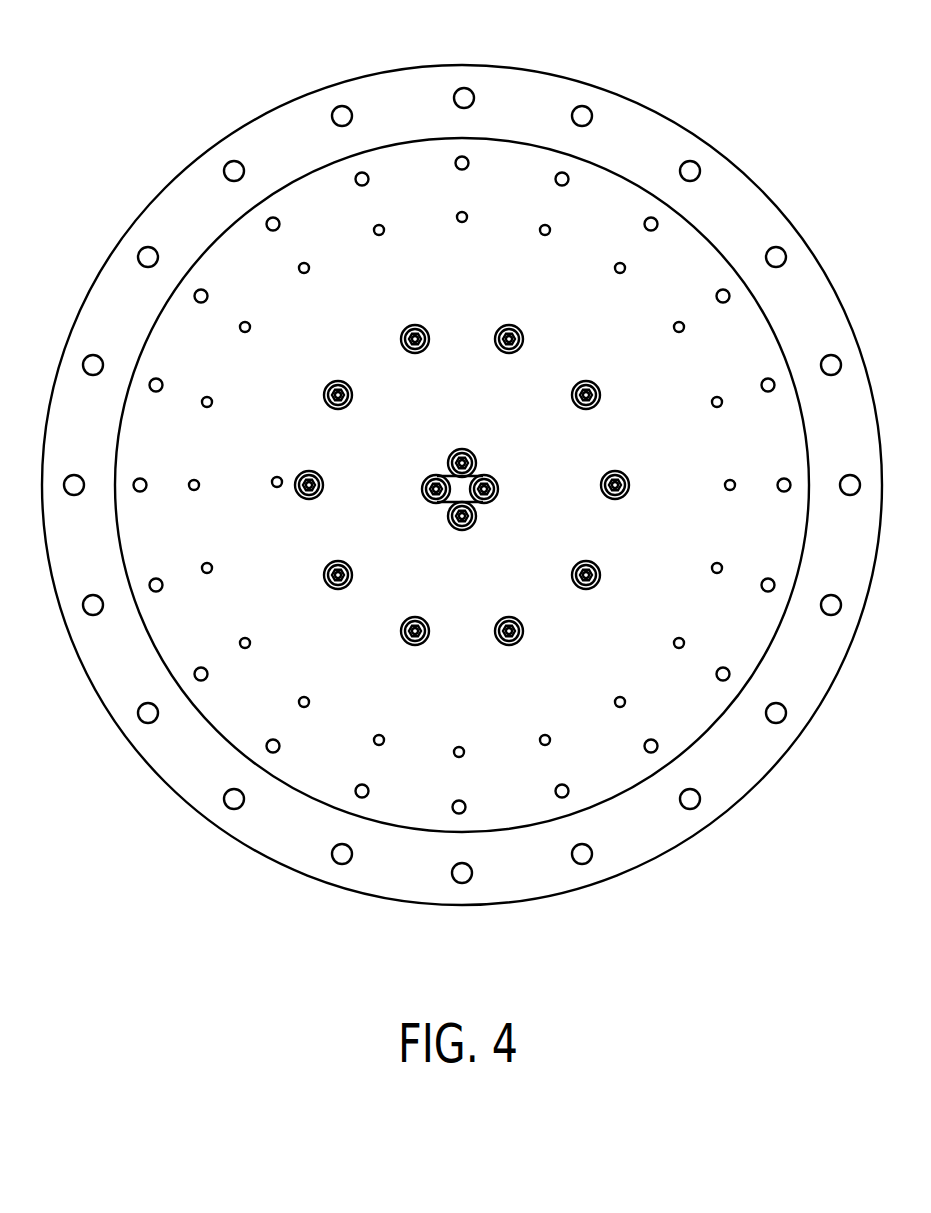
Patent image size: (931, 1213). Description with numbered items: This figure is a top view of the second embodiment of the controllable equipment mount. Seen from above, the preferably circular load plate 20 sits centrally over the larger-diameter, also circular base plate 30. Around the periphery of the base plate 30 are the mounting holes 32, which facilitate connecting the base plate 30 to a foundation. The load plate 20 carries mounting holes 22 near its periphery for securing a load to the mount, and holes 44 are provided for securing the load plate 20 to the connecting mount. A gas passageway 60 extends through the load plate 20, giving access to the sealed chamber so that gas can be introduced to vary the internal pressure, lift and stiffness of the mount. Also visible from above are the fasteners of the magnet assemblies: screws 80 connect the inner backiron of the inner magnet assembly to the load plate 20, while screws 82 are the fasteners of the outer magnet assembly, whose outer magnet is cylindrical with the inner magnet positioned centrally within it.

The load plate 20 is at (205, 718).
The mounting holes 22 is at (452, 807).
The base plate 30 is at (397, 70).
The mounting holes 32 is at (465, 88).
The holes 44 is at (465, 752).
The gas passageway 60 is at (272, 482).
The screws 80 is at (462, 530).
The screws 82 is at (600, 397).